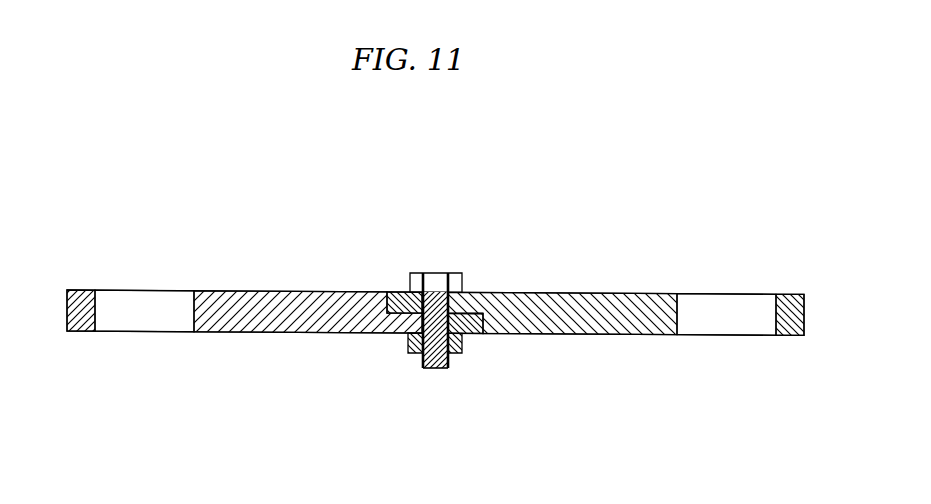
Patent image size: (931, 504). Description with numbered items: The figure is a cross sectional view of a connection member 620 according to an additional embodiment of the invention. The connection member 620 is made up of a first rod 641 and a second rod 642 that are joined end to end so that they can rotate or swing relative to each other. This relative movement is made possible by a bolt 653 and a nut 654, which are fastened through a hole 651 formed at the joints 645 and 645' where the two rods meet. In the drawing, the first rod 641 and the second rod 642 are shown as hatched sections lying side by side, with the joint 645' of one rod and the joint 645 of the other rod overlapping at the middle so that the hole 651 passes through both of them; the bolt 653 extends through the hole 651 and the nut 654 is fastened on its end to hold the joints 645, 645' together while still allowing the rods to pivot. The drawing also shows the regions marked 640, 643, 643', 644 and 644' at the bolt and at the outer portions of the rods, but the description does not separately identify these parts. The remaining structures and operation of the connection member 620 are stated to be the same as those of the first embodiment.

The connection member 620 is at (215, 194).
The bolt 640 is at (435, 377).
The first rod 641 is at (290, 302).
The second rod 642 is at (557, 327).
The opening of first bracket 643 is at (144, 337).
The opening of second bracket 643' is at (726, 339).
The end portion of first bracket 644 is at (76, 284).
The end portion of second bracket 644' is at (785, 288).
The joint 645 is at (479, 367).
The joint 645' is at (387, 255).
The hole 651 is at (458, 323).
The bolt 653 is at (437, 283).
The nut 654 is at (408, 347).